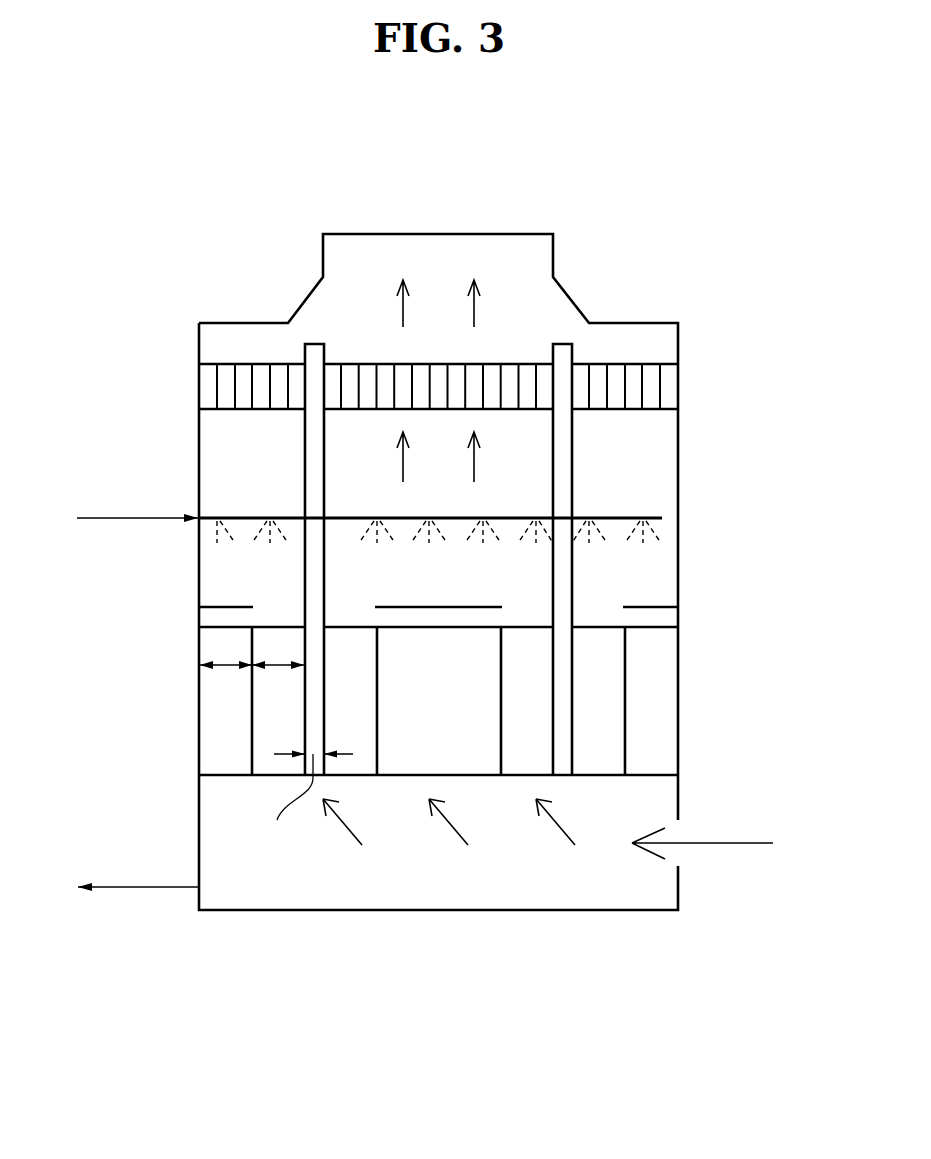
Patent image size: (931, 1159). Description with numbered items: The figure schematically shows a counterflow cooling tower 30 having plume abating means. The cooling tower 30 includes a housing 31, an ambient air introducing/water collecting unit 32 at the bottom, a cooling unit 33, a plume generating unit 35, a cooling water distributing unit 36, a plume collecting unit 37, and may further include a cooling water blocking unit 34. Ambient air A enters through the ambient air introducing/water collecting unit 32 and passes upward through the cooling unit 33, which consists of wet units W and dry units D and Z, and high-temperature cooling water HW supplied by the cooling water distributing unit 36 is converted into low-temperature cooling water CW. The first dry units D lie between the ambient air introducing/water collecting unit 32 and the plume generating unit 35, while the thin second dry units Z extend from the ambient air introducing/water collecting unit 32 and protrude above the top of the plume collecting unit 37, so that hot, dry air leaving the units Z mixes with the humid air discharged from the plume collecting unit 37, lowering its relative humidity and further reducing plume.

The cooling tower 30 is at (659, 222).
The housing 31 is at (199, 585).
The ambient air introducing/water collecting unit 32 is at (414, 862).
The cooling unit 33 is at (693, 627).
The cooling water blocking unit 34 is at (650, 603).
The plume generating unit 35 is at (588, 575).
The cooling water distributing unit 36 is at (610, 513).
The plume collecting unit 37 is at (683, 387).